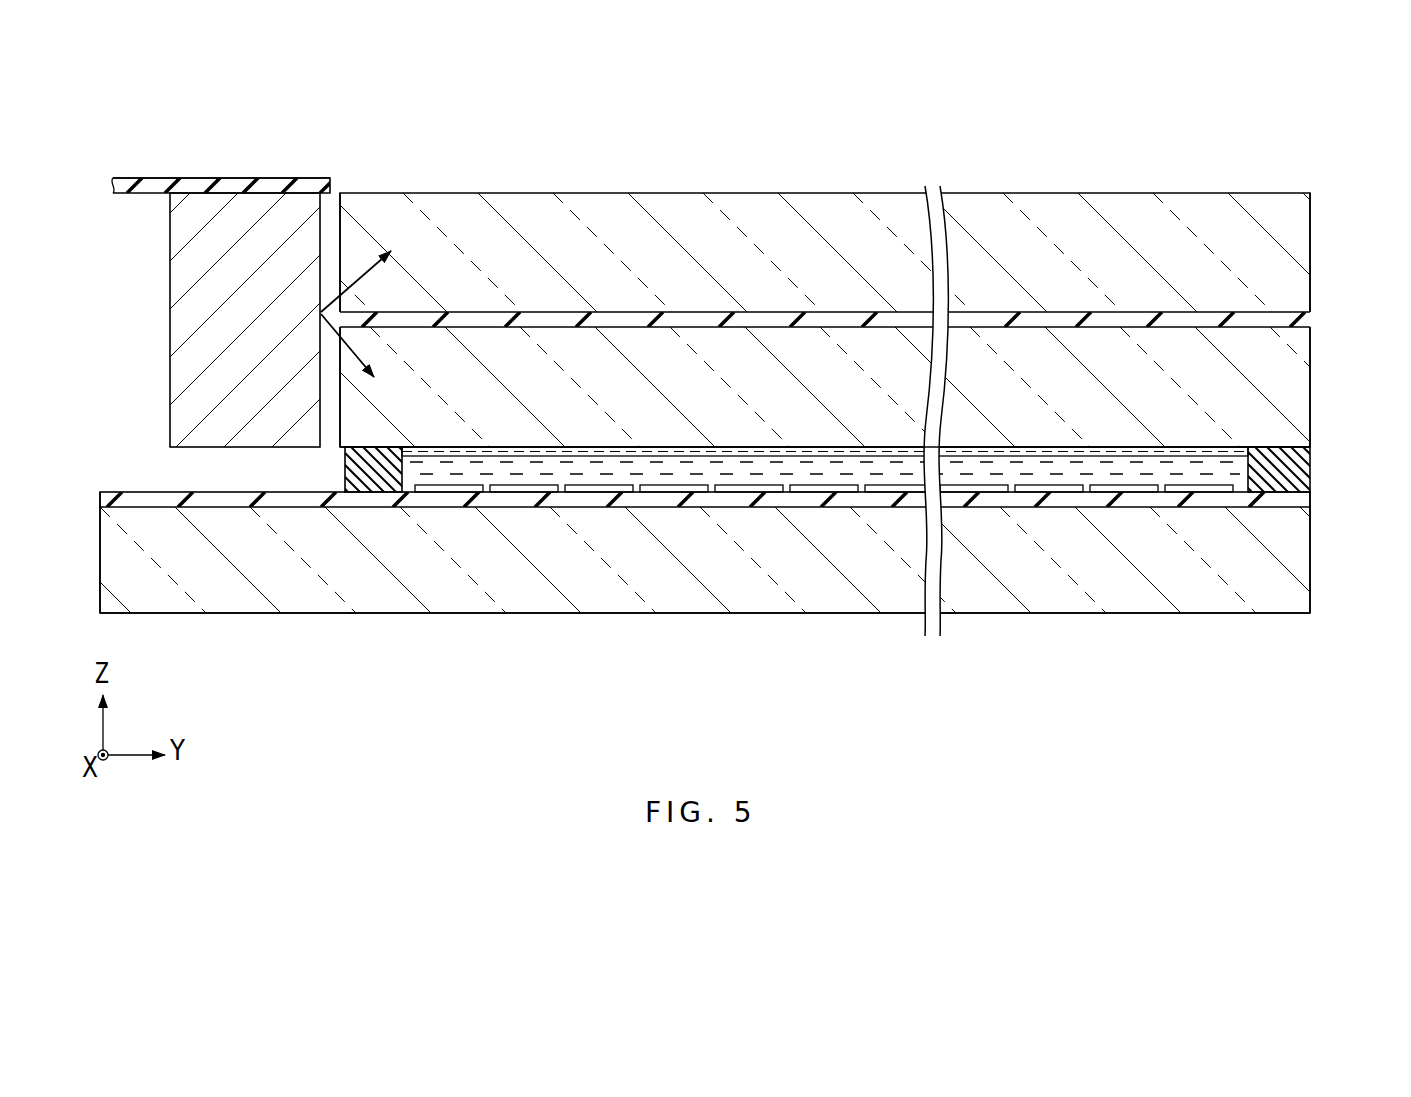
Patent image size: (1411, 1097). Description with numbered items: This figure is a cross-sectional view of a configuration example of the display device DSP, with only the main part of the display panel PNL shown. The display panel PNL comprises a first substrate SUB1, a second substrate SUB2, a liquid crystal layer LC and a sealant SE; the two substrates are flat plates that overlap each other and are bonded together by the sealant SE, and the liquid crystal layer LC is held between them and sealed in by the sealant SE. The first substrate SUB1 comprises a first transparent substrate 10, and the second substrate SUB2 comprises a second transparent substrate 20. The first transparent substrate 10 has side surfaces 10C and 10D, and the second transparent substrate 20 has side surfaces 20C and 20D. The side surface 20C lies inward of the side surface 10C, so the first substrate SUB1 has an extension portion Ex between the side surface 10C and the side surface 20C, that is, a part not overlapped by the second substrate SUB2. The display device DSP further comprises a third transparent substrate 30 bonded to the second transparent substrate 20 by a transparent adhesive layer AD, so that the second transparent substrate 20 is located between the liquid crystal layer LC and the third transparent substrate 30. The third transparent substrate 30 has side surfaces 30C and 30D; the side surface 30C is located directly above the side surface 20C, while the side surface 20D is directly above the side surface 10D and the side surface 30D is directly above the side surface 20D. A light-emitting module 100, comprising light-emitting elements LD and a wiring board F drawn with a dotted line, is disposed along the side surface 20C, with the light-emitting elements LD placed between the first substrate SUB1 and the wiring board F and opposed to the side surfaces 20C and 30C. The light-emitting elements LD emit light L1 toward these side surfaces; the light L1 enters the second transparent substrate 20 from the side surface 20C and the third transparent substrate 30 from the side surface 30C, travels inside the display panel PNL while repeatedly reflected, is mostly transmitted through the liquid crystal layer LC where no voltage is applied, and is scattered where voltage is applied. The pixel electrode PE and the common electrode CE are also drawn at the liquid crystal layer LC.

The light-emitting module 100 is at (150, 169).
The wiring board F is at (198, 186).
The side surface of the third transparent substrate 30C is at (336, 236).
The light-emitting element LD is at (178, 290).
The light L1 is at (352, 350).
The side surface of the second transparent substrate 20C is at (335, 382).
The extension portion Ex is at (243, 488).
The sealant SE is at (345, 472).
The side surface of the first transparent substrate 10C is at (96, 549).
The first transparent substrate 10 is at (447, 602).
The liquid crystal layer LC is at (622, 485).
The pixel electrode PE is at (686, 490).
The display panel PNL is at (837, 626).
The display device DSP is at (910, 626).
The common electrode CE is at (822, 446).
The third transparent substrate 30 is at (800, 228).
The second transparent substrate 20 is at (868, 335).
The side surface of the third transparent substrate 30D is at (1317, 235).
The transparent adhesive layer AD is at (1312, 320).
The side surface of the second transparent substrate 20D is at (1317, 398).
The second substrate SUB2 is at (1316, 451).
The side surface of the first transparent substrate 10D is at (1319, 546).
The first substrate SUB1 is at (1316, 614).